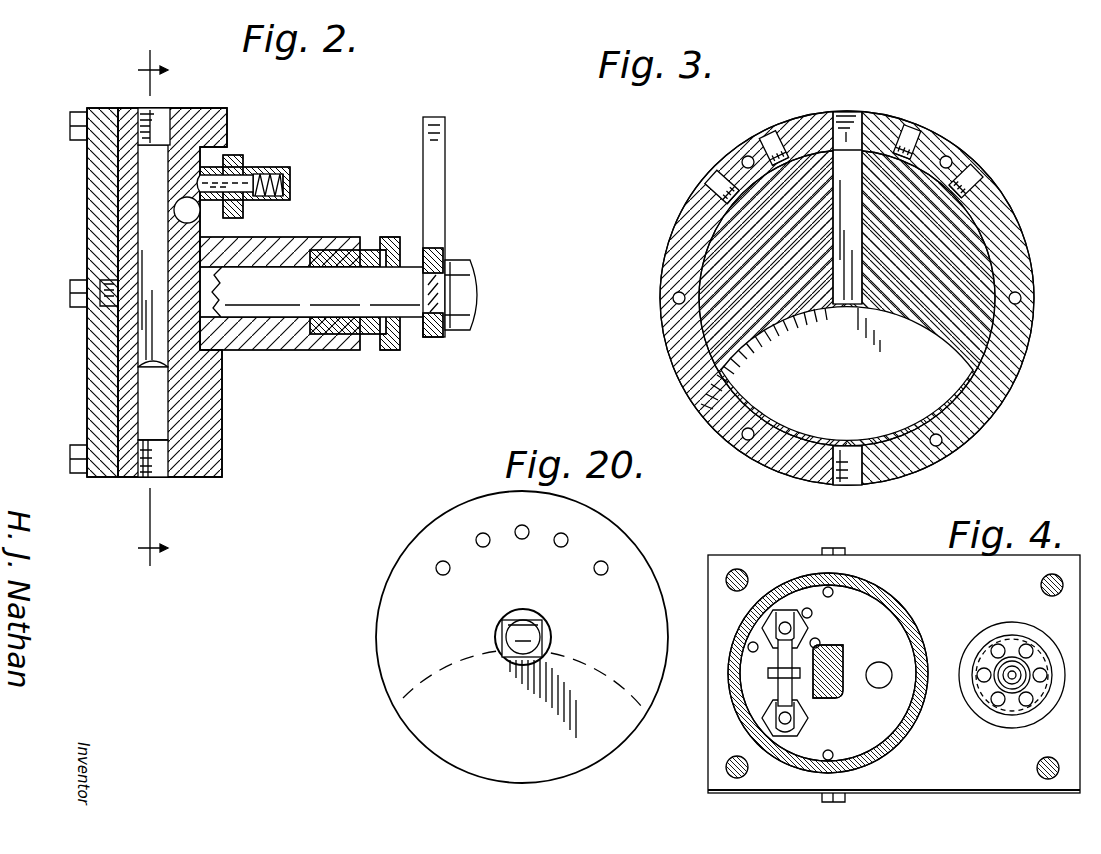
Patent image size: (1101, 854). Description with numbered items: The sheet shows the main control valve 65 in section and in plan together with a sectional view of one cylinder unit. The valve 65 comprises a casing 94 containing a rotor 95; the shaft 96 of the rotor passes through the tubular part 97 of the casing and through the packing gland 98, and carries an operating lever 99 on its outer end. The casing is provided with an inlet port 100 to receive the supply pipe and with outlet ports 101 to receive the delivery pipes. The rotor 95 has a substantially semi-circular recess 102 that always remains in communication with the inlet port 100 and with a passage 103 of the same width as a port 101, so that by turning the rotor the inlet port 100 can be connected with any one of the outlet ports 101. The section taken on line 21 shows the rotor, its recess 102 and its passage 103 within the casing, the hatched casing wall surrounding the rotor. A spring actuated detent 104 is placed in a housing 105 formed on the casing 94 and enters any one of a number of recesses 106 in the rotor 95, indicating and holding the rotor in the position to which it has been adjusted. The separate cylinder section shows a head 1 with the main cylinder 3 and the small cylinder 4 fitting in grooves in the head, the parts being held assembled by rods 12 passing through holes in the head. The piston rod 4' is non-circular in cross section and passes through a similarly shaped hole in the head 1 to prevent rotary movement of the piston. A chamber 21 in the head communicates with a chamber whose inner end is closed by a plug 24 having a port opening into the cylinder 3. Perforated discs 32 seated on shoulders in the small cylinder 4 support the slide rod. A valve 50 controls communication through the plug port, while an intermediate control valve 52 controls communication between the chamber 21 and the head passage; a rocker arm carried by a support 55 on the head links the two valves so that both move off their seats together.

In FIG. 4, the head 1 is at (898, 566).
In FIG. 4, the main cylinder 3 is at (750, 617).
In FIG. 4, the small cylinder 4 is at (1012, 667).
In FIG. 4, the piston rod 4' is at (847, 663).
In FIG. 4, the rods 12 is at (742, 572).
In FIG. 2, the chamber 21 is at (152, 310).
In FIG. 4, the plug 24 is at (790, 736).
In FIG. 4, the perforated discs 32 is at (1013, 647).
In FIG. 4, the valve 50 is at (796, 719).
In FIG. 4, the intermediate control valve 52 is at (794, 627).
In FIG. 4, the support 55 is at (778, 674).
In FIG. 2, the valve 65 is at (232, 452).
In FIG. 3, the valve 65 is at (660, 360).
In FIG. 2, the casing 94 is at (205, 478).
In FIG. 3, the casing 94 is at (694, 389).
In FIG. 2, the rotor 95 is at (118, 403).
In FIG. 3, the rotor 95 is at (965, 248).
In FIG. 20, the rotor 95 is at (381, 598).
In FIG. 2, the shaft 96 is at (360, 262).
In FIG. 20, the shaft 96 is at (500, 629).
In FIG. 2, the tubular part 97 is at (283, 350).
In FIG. 2, the packing gland 98 is at (390, 350).
In FIG. 2, the operating lever 99 is at (446, 128).
In FIG. 2, the inlet port 100 is at (145, 465).
In FIG. 3, the inlet port 100 is at (848, 487).
In FIG. 2, the outlet ports 101 is at (155, 123).
In FIG. 3, the outlet ports 101 is at (914, 137).
In FIG. 2, the bore 102 is at (150, 340).
In FIG. 3, the bore 102 is at (956, 388).
In FIG. 2, the passage 103 is at (153, 200).
In FIG. 3, the passage 103 is at (853, 168).
In FIG. 2, the spring actuated detent 104 is at (236, 180).
In FIG. 2, the housing 105 is at (287, 170).
In FIG. 2, the recesses 106 is at (200, 225).
In FIG. 20, the recesses 106 is at (442, 565).